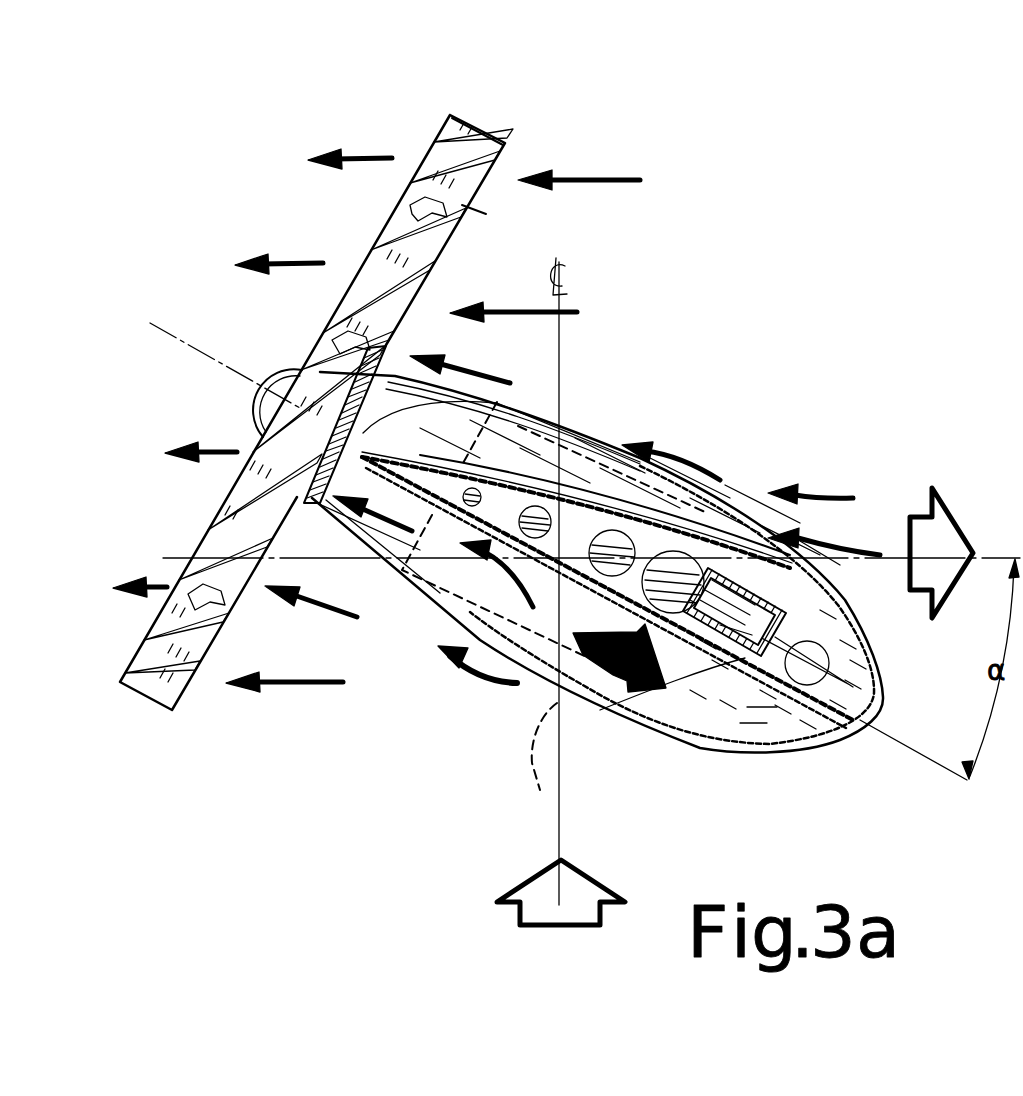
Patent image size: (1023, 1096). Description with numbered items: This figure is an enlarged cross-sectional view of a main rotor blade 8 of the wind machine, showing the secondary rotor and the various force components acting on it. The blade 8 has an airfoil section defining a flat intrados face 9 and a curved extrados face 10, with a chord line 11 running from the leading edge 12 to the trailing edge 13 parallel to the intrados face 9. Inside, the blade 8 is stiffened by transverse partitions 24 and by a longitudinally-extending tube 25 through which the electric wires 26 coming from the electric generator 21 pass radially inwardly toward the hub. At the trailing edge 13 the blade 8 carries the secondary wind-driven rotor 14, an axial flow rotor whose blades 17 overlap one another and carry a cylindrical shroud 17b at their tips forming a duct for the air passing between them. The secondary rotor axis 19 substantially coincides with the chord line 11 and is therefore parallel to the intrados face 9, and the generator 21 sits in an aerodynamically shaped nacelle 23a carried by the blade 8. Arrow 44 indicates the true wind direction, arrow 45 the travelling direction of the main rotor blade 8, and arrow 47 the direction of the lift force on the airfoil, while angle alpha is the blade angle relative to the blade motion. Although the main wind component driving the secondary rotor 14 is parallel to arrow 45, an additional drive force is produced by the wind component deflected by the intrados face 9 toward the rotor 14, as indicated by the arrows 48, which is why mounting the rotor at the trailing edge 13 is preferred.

The blades 17 is at (378, 296).
The cylindrical shroud 17b is at (500, 147).
The secondary wind-driven rotor 14 is at (474, 210).
The secondary rotor axis 19 is at (190, 348).
The trailing edge 13 is at (495, 403).
The blade 8 is at (528, 478).
The transverse partitions 24 is at (577, 530).
The curved extrados face 10 is at (648, 548).
The longitudinally-extending tube 25 is at (690, 575).
The nacelle 23a is at (740, 545).
The arrow indicating travelling direction of the main rotor blade 45 is at (928, 532).
The leading edge 12 is at (872, 718).
The chord line 11 is at (915, 772).
The arrows indicating deflected wind component 48 is at (517, 683).
The arrow indicating direction of lift force 47 is at (585, 650).
The arrow indicating true wind direction 44 is at (533, 878).
The electric generator 21 is at (567, 800).
The electric wires 26 is at (757, 655).
The flat intrados face 9 is at (765, 700).